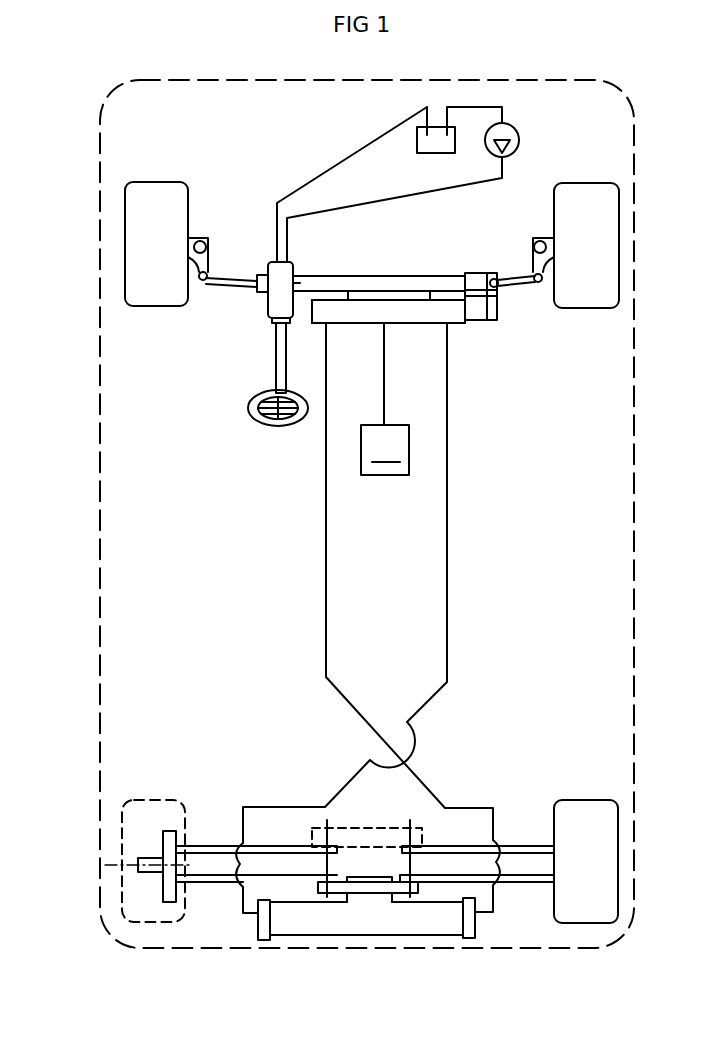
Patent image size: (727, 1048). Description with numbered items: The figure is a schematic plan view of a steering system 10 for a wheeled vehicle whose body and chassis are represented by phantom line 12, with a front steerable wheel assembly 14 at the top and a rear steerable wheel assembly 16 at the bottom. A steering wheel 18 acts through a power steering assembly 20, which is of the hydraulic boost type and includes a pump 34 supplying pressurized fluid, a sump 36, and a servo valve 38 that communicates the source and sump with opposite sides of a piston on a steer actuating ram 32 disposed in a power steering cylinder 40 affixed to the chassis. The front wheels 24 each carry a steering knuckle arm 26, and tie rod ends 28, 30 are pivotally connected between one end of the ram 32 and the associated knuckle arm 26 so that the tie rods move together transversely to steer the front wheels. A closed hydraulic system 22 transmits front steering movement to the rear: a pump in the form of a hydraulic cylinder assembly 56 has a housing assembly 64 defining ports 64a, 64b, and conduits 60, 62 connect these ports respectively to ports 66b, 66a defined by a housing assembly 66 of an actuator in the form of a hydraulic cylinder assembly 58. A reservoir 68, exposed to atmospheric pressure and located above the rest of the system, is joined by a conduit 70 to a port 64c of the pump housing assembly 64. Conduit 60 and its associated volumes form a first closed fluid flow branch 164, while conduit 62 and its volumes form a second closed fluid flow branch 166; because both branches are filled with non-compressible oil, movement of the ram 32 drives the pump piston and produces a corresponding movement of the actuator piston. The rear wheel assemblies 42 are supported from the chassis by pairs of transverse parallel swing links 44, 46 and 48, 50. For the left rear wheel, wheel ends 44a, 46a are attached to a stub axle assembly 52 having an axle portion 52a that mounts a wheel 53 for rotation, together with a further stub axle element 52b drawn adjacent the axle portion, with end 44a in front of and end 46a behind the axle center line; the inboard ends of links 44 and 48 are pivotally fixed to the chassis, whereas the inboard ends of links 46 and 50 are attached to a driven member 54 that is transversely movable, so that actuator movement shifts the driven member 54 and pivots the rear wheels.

The steering system 10 is at (236, 508).
The phantom line 12 is at (217, 66).
The front steerable wheel assembly 14 is at (232, 212).
The rear steerable wheel assembly 16 is at (230, 930).
The steering wheel 18 is at (249, 412).
The power steering assembly 20 is at (246, 295).
The closed hydraulic system 22 is at (458, 480).
The front wheels 24 is at (160, 182).
The steering knuckle arm 26 is at (203, 242).
The tie rod end 28 is at (245, 278).
The tie rod end 30 is at (508, 277).
The steer actuating ram 32 is at (474, 272).
The pump 34 is at (519, 138).
The sump 36 is at (422, 155).
The servo valve 38 is at (294, 268).
The power steering cylinder 40 is at (394, 276).
The rear wheel assemblies 42 is at (142, 788).
The swing link 44 is at (322, 846).
The wheel end 44a is at (178, 845).
The swing link 46 is at (323, 877).
The wheel end 46a is at (178, 885).
The swing link 48 is at (517, 845).
The swing link 50 is at (520, 884).
The stub axle assembly 52 is at (160, 840).
The axle portion 52a is at (148, 878).
The hub bearing 52b is at (120, 878).
The wheel 53 is at (165, 800).
The driven member 54 is at (378, 893).
The hydraulic cylinder assembly 56 is at (437, 358).
The hydraulic cylinder assembly 58 is at (337, 940).
The conduit 60 is at (325, 530).
The conduit 62 is at (447, 523).
The housing assembly 64 is at (366, 328).
The port 64a is at (312, 330).
The port 64b is at (448, 324).
The port 64c is at (385, 328).
The housing assembly 66 is at (390, 930).
The port 66a is at (262, 920).
The port 66b is at (468, 915).
The reservoir 68 is at (385, 450).
The conduit 70 is at (383, 390).
The first closed fluid flow branch 164 is at (322, 587).
The second closed fluid flow branch 166 is at (450, 573).